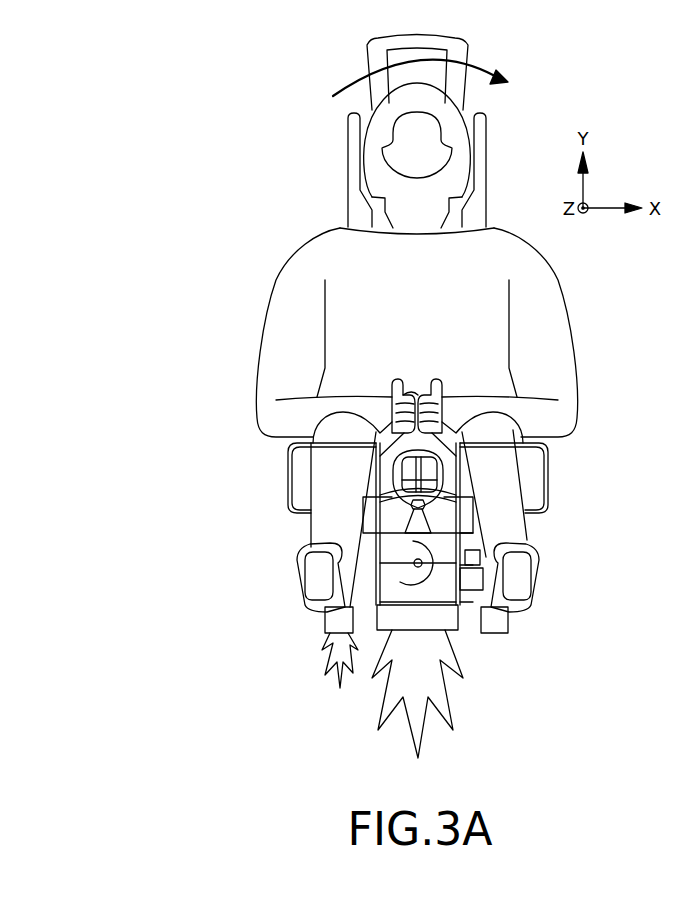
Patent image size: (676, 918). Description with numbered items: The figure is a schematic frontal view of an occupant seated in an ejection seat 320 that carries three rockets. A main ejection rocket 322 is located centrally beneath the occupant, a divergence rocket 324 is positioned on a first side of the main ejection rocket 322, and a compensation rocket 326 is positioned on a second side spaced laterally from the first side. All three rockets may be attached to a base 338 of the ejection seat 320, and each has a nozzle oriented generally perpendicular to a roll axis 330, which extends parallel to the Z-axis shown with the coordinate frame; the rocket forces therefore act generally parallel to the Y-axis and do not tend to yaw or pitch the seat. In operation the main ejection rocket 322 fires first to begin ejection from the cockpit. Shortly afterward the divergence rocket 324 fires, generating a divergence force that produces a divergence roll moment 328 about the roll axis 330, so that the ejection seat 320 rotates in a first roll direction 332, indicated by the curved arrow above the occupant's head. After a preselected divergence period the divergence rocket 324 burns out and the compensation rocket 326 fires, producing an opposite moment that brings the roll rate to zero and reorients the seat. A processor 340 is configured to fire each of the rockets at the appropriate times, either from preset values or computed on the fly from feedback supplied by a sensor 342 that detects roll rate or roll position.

The ejection seat 320 is at (247, 198).
The main ejection rocket 322 is at (457, 630).
The divergence rocket 324 is at (330, 622).
The compensation rocket 326 is at (508, 633).
The divergence roll moment 328 is at (443, 580).
The roll axis 330 is at (410, 567).
The first roll direction 332 is at (500, 63).
The base 338 is at (360, 547).
The processor 340 is at (487, 578).
The sensor 342 is at (480, 553).